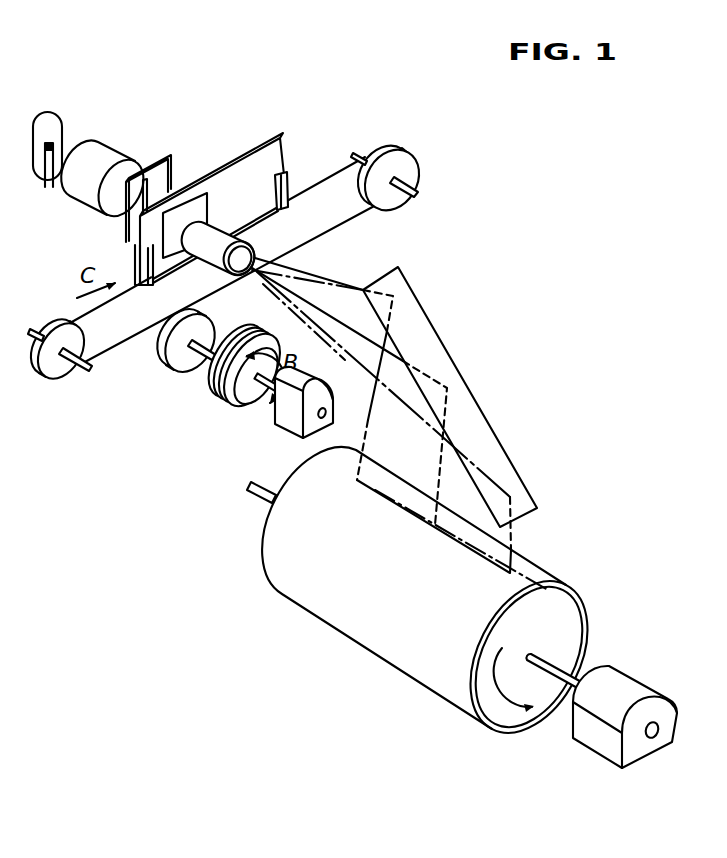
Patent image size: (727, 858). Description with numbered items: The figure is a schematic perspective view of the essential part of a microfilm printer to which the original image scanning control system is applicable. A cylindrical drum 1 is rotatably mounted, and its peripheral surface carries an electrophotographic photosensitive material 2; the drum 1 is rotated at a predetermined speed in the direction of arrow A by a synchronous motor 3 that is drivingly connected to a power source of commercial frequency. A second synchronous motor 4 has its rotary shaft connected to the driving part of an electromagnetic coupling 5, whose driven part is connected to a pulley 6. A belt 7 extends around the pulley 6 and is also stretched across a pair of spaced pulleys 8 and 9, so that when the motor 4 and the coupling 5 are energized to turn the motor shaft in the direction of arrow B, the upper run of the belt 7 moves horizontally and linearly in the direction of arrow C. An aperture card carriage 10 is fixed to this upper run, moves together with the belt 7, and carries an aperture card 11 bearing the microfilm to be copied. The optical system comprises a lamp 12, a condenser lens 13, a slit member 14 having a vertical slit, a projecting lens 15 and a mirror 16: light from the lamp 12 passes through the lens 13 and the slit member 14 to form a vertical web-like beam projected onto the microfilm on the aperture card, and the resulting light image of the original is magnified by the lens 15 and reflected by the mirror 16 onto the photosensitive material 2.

The cylindrical drum 1 is at (547, 628).
The electrophotographic photosensitive material 2 is at (532, 562).
The synchronous motor 3 is at (627, 687).
The second synchronous motor 4 is at (290, 422).
The electromagnetic coupling 5 is at (213, 393).
The pulley 6 is at (177, 357).
The belt 7 is at (347, 221).
The pulley 8 is at (398, 162).
The pulley 9 is at (57, 372).
The aperture card carriage 10 is at (283, 183).
The aperture card 11 is at (280, 140).
The lamp 12 is at (58, 112).
The condenser lens 13 is at (110, 145).
The slit member 14 is at (160, 182).
The projecting lens 15 is at (217, 234).
The mirror 16 is at (433, 340).